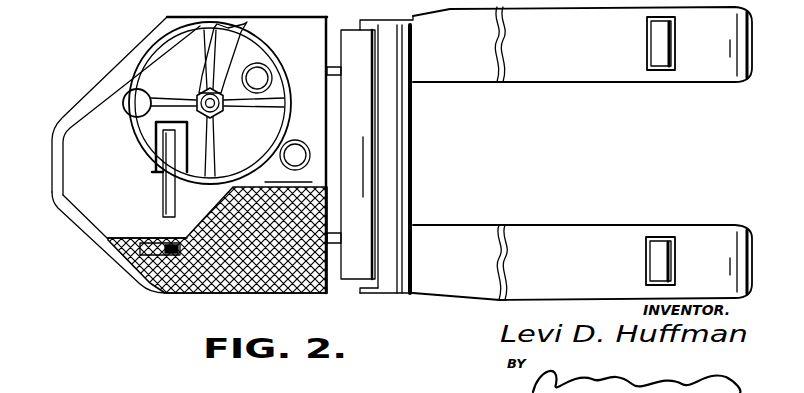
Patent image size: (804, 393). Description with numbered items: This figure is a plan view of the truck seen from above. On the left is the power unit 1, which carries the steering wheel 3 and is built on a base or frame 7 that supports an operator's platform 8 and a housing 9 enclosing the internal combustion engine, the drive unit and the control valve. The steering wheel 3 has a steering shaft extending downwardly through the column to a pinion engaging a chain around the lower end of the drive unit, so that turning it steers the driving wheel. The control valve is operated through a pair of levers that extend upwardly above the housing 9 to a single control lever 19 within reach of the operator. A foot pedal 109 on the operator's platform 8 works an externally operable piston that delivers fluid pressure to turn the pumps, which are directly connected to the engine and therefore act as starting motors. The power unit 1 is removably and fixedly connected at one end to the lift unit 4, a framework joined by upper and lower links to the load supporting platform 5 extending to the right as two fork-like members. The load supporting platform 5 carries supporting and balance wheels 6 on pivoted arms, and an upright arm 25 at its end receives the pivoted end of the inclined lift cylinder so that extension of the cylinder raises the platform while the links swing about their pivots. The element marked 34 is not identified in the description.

The power unit 1 is at (303, 18).
The steering wheel 3 is at (288, 124).
The lift unit 4 is at (352, 274).
The load supporting platform 5 is at (560, 73).
The supporting and balance wheels 6 is at (655, 62).
The base or frame 7 is at (167, 292).
The operator's platform 8 is at (261, 283).
The housing 9 is at (68, 168).
The control lever 19 is at (167, 185).
The upright arm 25 is at (408, 167).
The top member 34 is at (97, 6).
The foot pedal 109 is at (154, 250).